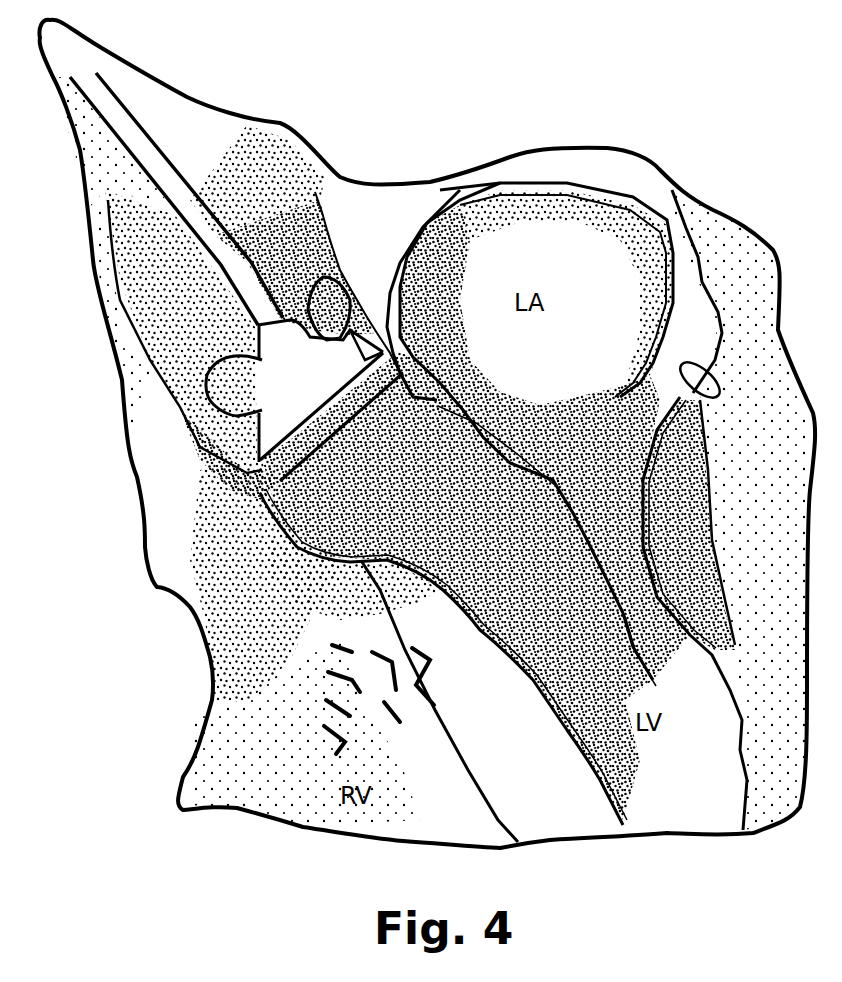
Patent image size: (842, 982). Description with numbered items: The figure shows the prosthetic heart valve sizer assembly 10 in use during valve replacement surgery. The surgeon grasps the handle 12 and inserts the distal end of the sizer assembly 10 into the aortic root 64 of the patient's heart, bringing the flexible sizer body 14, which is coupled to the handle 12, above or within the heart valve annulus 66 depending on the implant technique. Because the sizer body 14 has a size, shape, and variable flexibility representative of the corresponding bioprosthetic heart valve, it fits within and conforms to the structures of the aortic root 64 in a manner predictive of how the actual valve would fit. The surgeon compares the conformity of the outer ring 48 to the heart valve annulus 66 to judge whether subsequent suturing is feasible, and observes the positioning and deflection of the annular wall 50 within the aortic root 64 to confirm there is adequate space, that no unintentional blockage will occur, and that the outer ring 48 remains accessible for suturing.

The prosthetic heart valve sizer assembly 10 is at (177, 173).
The handle 12 is at (100, 92).
The flexible sizer body 14 is at (355, 350).
The outer ring 48 is at (257, 467).
The annular wall 50 is at (193, 417).
The aortic root 64 is at (267, 177).
The heart valve annulus 66 is at (260, 493).